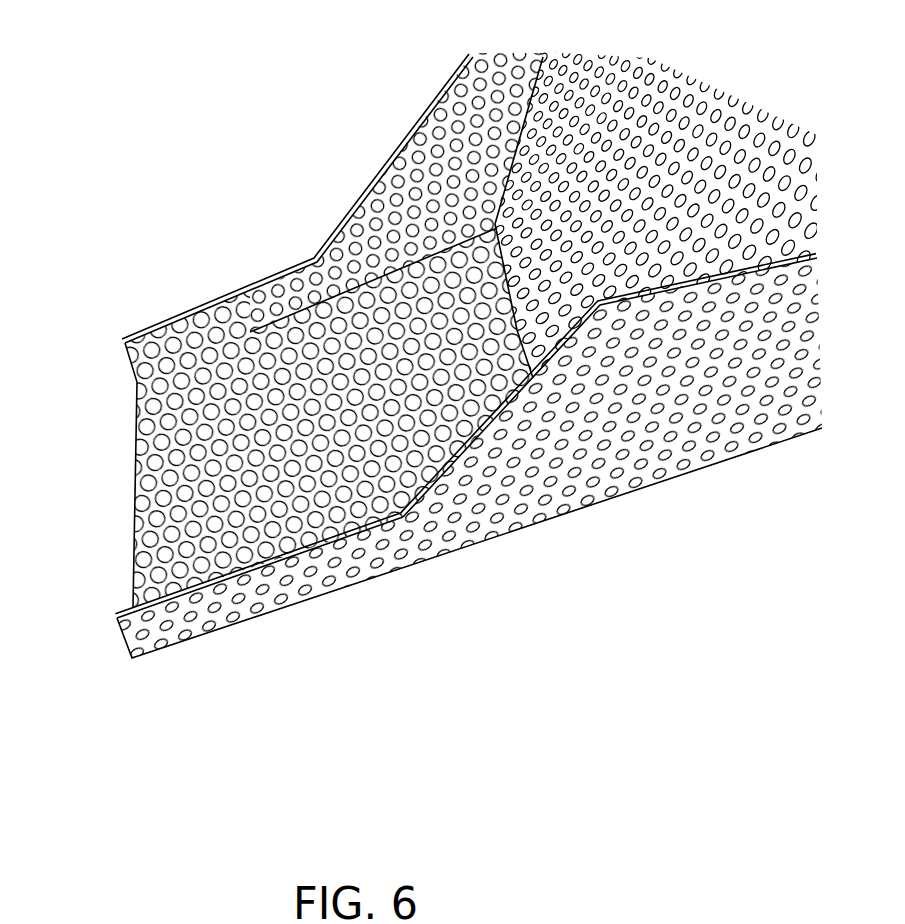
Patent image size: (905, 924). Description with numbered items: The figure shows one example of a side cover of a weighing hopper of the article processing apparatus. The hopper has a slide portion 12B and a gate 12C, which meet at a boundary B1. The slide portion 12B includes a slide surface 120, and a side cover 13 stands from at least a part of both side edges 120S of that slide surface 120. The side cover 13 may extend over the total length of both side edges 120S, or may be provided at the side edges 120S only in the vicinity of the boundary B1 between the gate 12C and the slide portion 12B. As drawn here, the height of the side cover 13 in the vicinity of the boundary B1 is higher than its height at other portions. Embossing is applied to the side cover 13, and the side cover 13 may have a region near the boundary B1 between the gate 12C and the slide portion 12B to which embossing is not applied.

The slide portion 12B is at (290, 395).
The side edges 120S is at (178, 368).
The slide surface 120 is at (182, 474).
The boundary B1 is at (510, 267).
The gate 12C is at (623, 260).
The side cover 13 is at (282, 588).